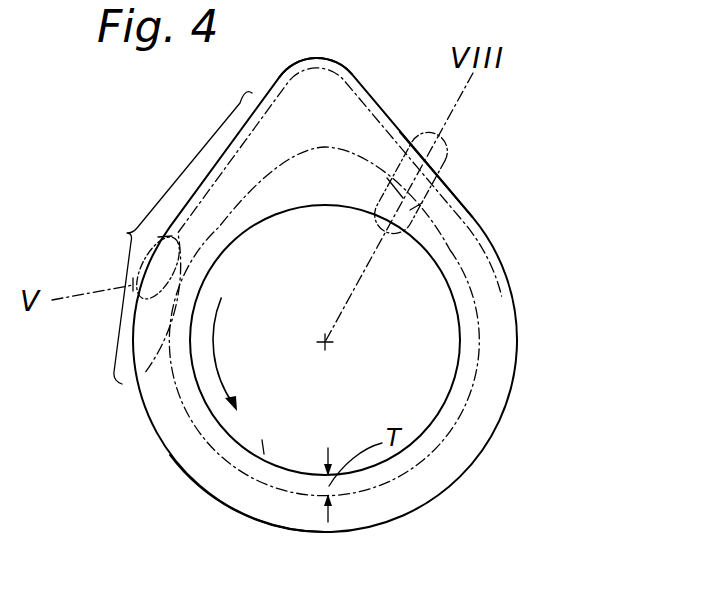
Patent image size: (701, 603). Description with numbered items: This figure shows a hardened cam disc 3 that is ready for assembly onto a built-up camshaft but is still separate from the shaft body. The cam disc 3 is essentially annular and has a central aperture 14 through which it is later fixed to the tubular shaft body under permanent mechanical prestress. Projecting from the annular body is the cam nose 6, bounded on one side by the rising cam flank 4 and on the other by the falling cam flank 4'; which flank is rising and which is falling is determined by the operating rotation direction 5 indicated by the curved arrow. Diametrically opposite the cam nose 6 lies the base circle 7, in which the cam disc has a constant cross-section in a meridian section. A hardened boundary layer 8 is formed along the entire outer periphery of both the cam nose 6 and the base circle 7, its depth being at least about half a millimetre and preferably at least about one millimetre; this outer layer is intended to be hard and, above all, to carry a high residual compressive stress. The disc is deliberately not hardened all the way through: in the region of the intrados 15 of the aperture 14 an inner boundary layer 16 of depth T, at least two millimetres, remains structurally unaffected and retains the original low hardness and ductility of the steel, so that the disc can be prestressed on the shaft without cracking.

The cam disc 3 is at (503, 267).
The rising cam flank 4 is at (181, 238).
The falling cam flank 4' is at (449, 164).
The operating rotation direction 5 is at (215, 343).
The cam nose 6 is at (318, 73).
The base circle 7 is at (247, 524).
The hardened boundary layer 8 is at (233, 146).
The aperture 14 is at (420, 332).
The intrados 15 is at (264, 448).
The inner boundary layer 16 is at (226, 434).